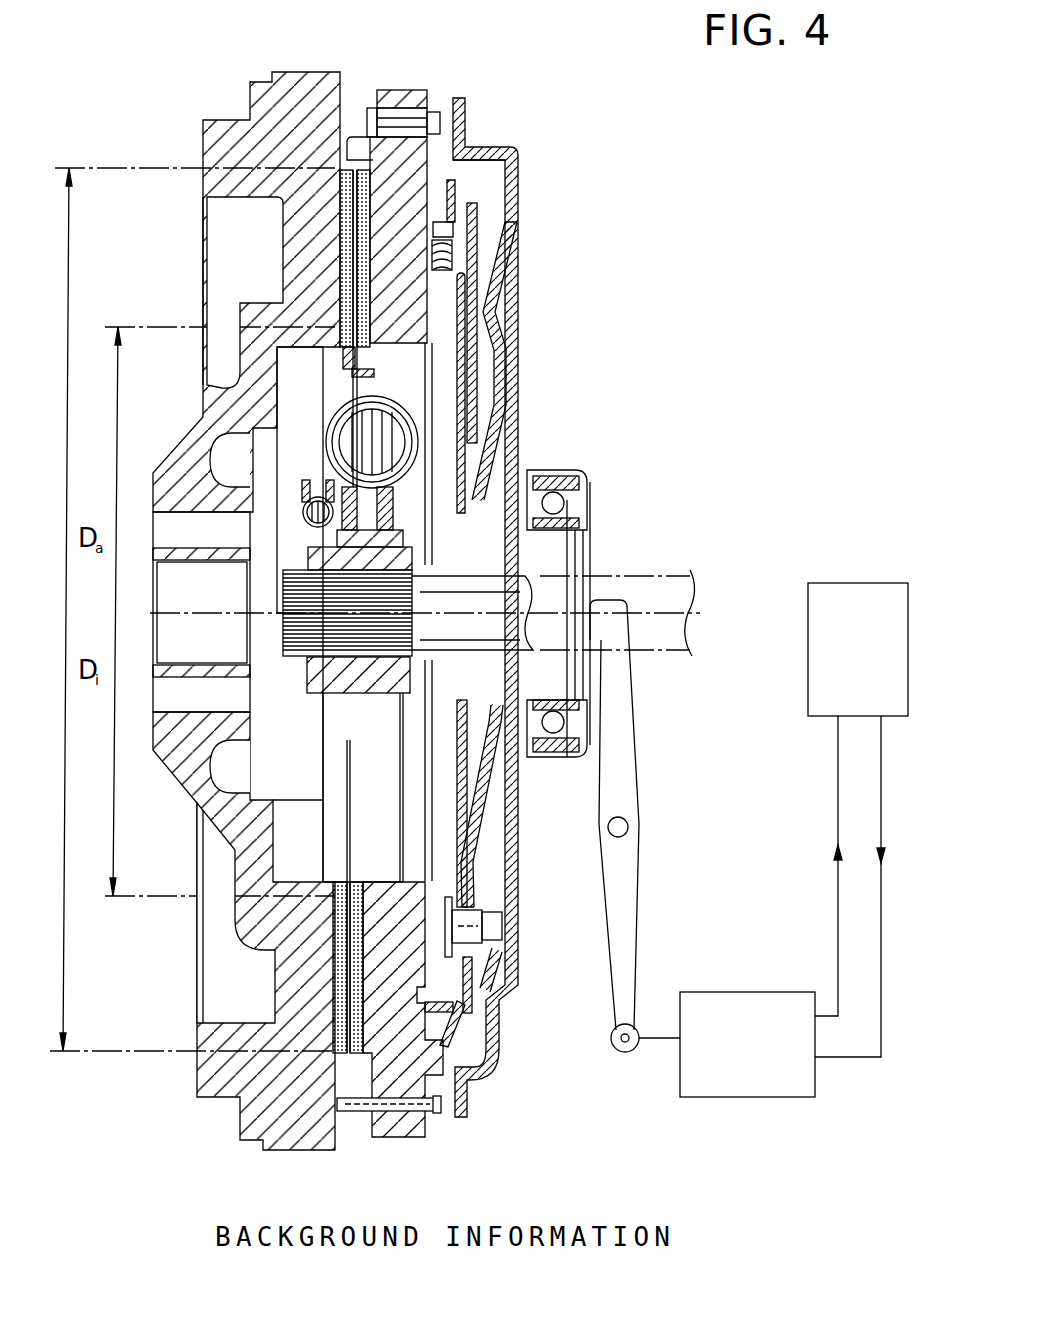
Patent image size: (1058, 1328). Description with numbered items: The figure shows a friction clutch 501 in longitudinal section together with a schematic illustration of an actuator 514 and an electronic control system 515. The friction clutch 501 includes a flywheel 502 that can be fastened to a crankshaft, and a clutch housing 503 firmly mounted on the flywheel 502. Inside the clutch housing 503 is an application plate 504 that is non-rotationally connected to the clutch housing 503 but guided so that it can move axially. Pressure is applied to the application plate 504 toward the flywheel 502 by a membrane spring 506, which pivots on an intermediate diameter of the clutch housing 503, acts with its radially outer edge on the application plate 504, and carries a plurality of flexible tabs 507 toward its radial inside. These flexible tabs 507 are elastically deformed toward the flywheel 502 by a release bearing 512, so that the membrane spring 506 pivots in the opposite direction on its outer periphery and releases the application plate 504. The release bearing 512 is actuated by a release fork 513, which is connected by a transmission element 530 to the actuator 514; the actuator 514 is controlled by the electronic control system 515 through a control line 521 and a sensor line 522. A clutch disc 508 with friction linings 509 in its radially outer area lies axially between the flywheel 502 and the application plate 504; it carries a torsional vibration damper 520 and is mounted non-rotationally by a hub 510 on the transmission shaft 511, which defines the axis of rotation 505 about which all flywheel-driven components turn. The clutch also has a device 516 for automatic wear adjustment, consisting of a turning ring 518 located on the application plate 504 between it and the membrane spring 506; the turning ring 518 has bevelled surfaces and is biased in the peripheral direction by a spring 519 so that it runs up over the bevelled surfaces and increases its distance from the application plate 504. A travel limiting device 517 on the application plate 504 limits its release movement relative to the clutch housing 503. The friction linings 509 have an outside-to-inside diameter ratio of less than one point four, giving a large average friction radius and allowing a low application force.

The friction clutch 501 is at (585, 202).
The flywheel 502 is at (258, 84).
The clutch housing 503 is at (510, 240).
The application plate 504 is at (407, 100).
The axis of rotation 505 is at (219, 613).
The membrane spring 506 is at (478, 215).
The flexible tabs 507 is at (477, 437).
The clutch disc 508 is at (313, 780).
The friction linings 509 is at (345, 890).
The hub 510 is at (322, 700).
The transmission shaft 511 is at (520, 590).
The release bearing 512 is at (590, 485).
The release fork 513 is at (622, 725).
The actuator 514 is at (767, 1097).
The electronic control system 515 is at (852, 585).
The device for automatic wear adjustment 516 is at (470, 193).
The travel limiting device 517 is at (440, 1110).
The turning ring 518 is at (453, 1030).
The spring 519 is at (445, 268).
The torsional vibration damper 520 is at (312, 432).
The control line 521 is at (881, 895).
The sensor line 522 is at (836, 777).
The transmission element 530 is at (656, 1044).